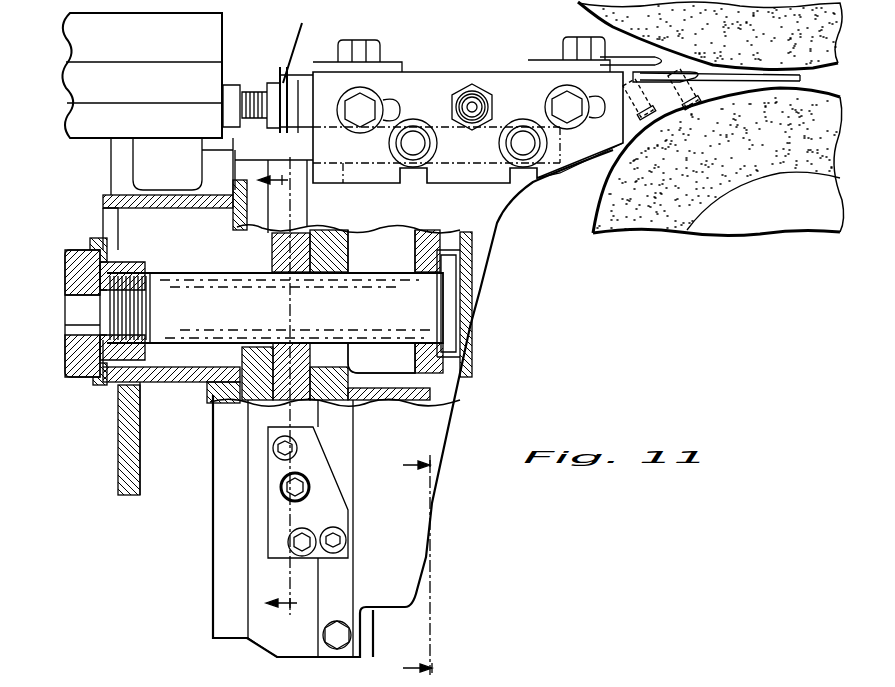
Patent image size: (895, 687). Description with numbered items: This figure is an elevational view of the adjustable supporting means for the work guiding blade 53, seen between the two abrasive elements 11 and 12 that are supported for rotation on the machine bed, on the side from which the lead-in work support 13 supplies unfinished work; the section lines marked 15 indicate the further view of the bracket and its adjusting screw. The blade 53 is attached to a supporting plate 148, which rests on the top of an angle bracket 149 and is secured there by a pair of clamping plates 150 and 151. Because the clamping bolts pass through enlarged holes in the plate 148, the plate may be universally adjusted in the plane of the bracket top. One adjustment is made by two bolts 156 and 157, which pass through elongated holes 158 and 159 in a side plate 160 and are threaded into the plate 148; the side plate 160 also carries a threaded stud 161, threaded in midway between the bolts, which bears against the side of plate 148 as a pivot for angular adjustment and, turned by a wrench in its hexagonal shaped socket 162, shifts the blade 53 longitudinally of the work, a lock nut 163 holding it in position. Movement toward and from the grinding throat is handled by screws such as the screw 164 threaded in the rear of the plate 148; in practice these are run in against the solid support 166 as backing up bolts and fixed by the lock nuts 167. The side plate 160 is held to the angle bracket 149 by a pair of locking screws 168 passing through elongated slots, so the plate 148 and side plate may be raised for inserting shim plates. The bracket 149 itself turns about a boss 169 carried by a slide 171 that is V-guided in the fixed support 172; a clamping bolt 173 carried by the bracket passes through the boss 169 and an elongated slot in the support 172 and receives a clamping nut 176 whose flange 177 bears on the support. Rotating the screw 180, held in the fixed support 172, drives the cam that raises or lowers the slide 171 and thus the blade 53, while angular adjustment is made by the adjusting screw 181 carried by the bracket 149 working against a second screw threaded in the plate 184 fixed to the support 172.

The abrasive element 11 is at (583, 13).
The abrasive element 12 is at (643, 220).
The lead-in work support 13 is at (272, 395).
The section line 15 is at (410, 565).
The blade 53 is at (800, 80).
The supporting plate 148 is at (440, 72).
The angle bracket 149 is at (507, 215).
The clamping plate 150 is at (318, 62).
The clamping plate 151 is at (638, 65).
The bolt 156 is at (383, 62).
The bolt 157 is at (560, 107).
The elongated hole 158 is at (398, 100).
The elongated hole 159 is at (575, 72).
The side plate 160 is at (585, 168).
The threaded stud 161 is at (459, 124).
The hexagonal shaped socket 162 is at (478, 97).
The lock nut 163 is at (455, 101).
The screw 164 is at (262, 118).
The solid support 166 is at (222, 85).
The lock nut 167 is at (295, 55).
The locking screw 168 is at (413, 170).
The boss 169 is at (340, 358).
The slide 171 is at (277, 397).
The fixed support 172 is at (298, 645).
The clamping bolt 173 is at (380, 290).
The clamping nut 176 is at (65, 265).
The flange 177 is at (80, 250).
The screw 180 is at (281, 487).
The adjusting screw 181 is at (335, 640).
The plate 184 is at (278, 518).